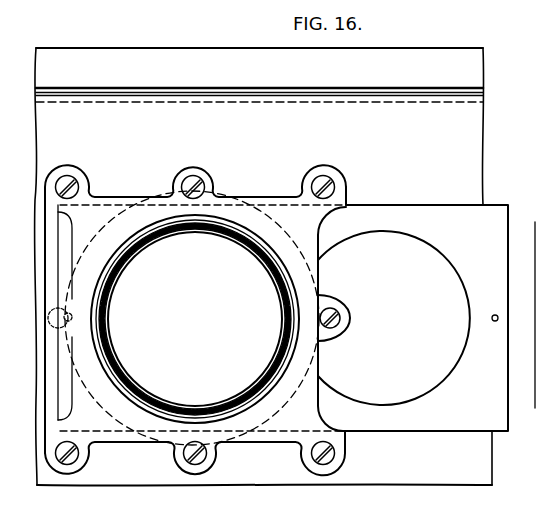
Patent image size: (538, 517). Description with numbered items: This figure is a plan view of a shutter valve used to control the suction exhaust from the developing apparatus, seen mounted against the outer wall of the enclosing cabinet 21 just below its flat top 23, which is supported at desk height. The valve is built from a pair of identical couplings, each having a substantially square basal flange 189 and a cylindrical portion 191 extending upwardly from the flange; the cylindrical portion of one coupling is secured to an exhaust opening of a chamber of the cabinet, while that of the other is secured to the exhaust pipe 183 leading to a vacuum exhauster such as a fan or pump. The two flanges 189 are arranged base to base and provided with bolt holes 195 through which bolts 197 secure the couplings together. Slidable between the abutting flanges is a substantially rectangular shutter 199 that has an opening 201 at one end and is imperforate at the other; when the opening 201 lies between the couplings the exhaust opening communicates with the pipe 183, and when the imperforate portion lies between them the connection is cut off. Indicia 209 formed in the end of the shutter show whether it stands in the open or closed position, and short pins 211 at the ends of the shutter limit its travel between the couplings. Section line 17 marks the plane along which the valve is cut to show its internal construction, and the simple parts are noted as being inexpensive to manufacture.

The section line 17- 17 is at (194, 166).
The enclosing cabinet 21 is at (107, 117).
The flat top 23 is at (440, 55).
The exhaust pipe 183 is at (223, 235).
The basal flange 189 is at (88, 189).
The cylindrical portion 191 is at (278, 257).
The bolt hole 195 is at (344, 184).
The bolt 197 is at (317, 177).
The shutter 199 is at (425, 213).
The opening 201 is at (418, 398).
The indicia 209 is at (487, 292).
The pin 211 is at (495, 322).